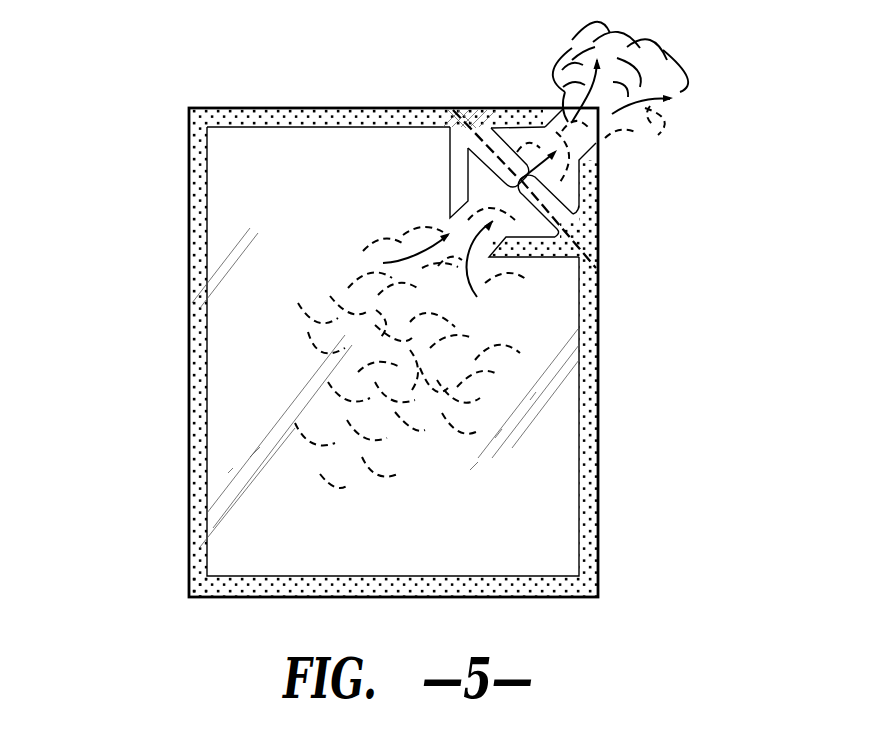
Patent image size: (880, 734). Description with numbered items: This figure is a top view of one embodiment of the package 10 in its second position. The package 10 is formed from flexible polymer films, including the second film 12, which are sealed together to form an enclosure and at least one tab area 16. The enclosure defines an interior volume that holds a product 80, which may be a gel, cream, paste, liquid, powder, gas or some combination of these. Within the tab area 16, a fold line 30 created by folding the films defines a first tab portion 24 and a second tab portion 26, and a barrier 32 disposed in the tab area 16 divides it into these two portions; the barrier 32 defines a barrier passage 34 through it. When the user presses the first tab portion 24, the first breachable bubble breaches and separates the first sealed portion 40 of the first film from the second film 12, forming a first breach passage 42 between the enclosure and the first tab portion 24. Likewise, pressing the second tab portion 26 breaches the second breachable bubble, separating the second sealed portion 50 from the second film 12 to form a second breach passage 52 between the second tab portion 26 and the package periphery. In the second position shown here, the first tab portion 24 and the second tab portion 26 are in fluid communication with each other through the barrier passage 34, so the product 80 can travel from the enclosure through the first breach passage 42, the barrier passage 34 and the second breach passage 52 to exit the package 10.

The package 10 is at (134, 88).
The second film 12 is at (222, 367).
The tab area 16 is at (607, 210).
The first tab portion 24 is at (543, 252).
The second tab portion 26 is at (591, 170).
The fold line 30 is at (588, 258).
The barrier 32 is at (505, 138).
The barrier passage 34 is at (462, 148).
The first sealed portion 40 is at (510, 188).
The first breach passage 42 is at (448, 223).
The second sealed portion 50 is at (530, 118).
The second breach passage 52 is at (592, 123).
The product 80 is at (678, 48).